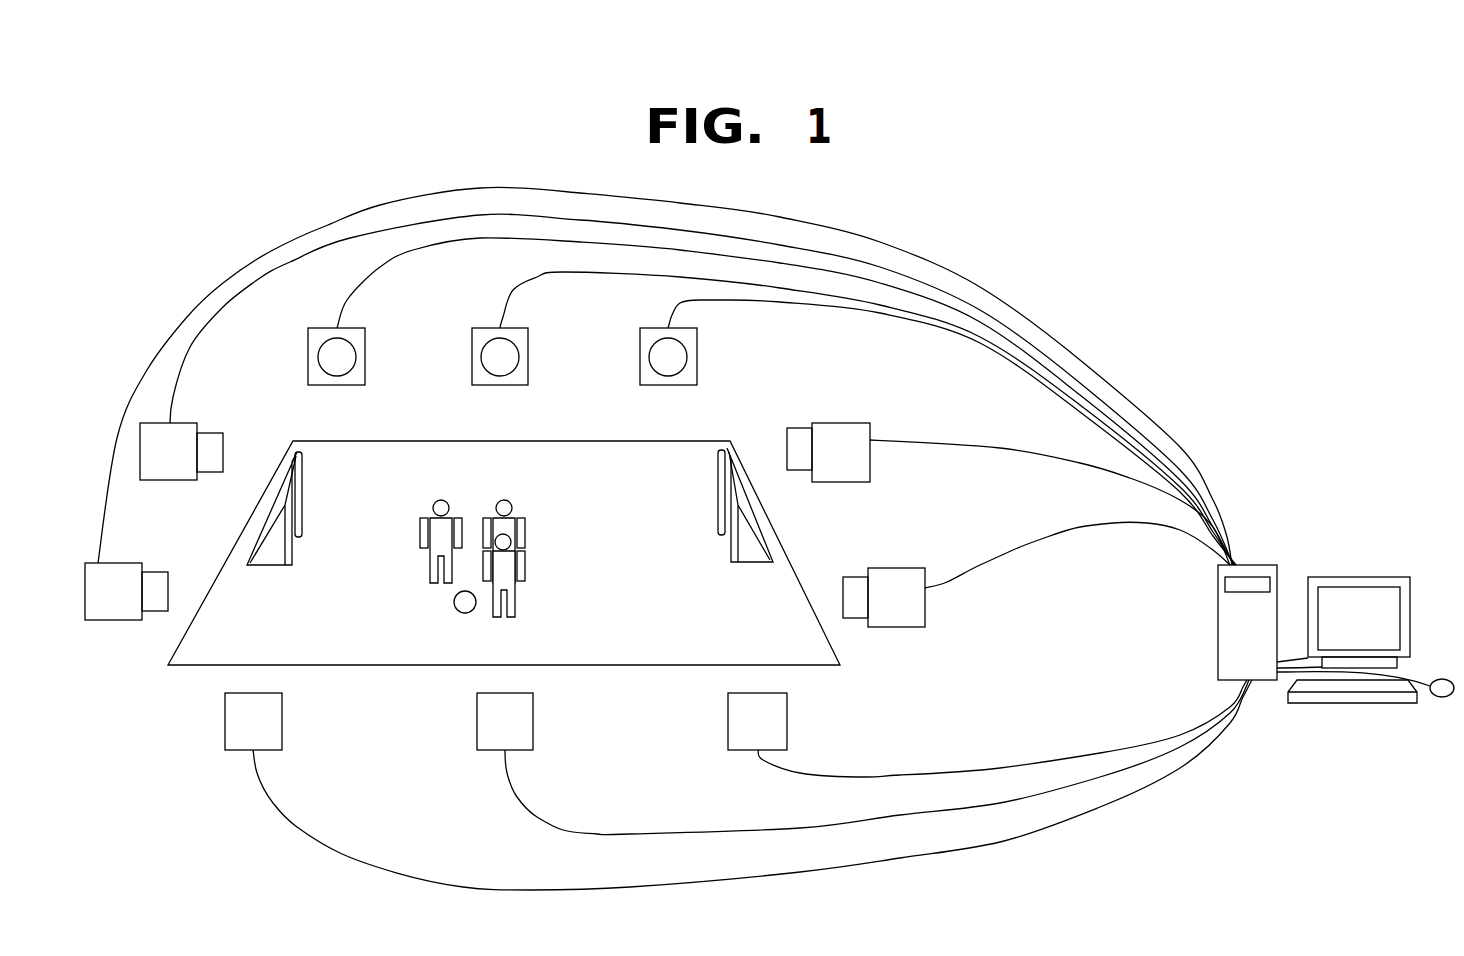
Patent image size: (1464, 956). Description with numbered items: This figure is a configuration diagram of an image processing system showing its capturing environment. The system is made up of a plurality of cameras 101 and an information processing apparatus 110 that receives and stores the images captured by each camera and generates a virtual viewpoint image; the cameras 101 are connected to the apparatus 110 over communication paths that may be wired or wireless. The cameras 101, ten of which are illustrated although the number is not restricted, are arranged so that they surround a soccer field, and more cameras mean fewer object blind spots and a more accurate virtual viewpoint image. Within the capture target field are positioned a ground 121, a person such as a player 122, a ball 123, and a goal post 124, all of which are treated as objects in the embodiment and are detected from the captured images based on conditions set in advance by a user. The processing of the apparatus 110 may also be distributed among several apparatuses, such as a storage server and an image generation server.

The camera 101 is at (365, 368).
The information processing apparatus 110 is at (1277, 585).
The ground 121 is at (813, 643).
The person 122 is at (449, 506).
The ball 123 is at (456, 602).
The goal post 124 is at (303, 500).